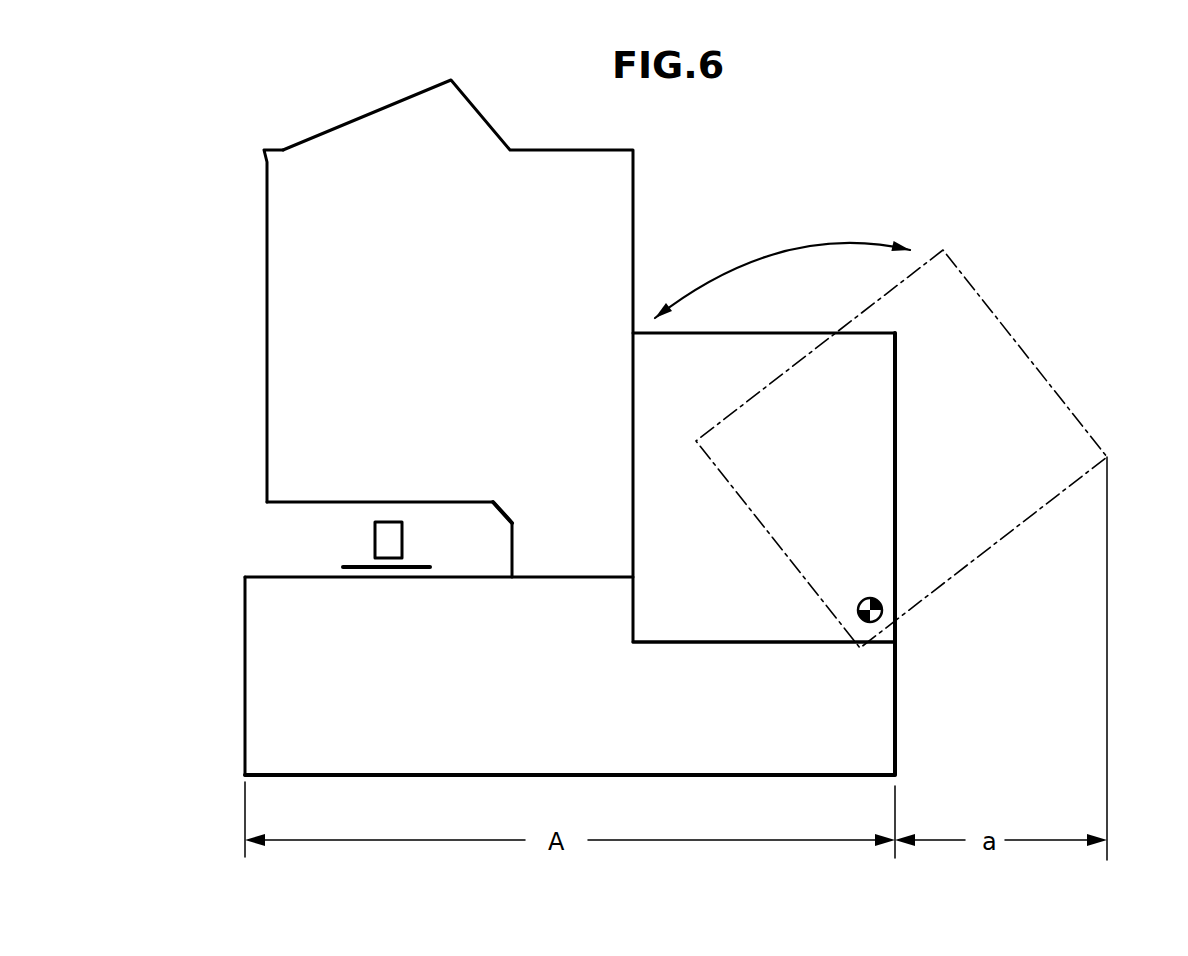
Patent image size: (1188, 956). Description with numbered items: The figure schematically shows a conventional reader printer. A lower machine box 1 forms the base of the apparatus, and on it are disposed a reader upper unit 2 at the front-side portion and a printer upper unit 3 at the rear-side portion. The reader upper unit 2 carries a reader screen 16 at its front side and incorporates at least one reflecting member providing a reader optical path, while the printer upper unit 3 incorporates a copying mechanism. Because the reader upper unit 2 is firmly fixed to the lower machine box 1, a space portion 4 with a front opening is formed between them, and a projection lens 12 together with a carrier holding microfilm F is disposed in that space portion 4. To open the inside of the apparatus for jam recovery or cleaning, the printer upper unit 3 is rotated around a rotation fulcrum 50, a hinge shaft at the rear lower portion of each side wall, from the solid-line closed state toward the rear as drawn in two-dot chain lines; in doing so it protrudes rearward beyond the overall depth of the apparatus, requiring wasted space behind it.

The lower machine box 1 is at (256, 662).
The reader upper unit 2 is at (553, 168).
The printer upper unit 3 is at (793, 346).
The space portion 4 is at (262, 522).
The projection lens 12 is at (378, 528).
The microfilm F is at (355, 566).
The reader screen 16 is at (266, 202).
The rotation fulcrum 50 is at (881, 602).